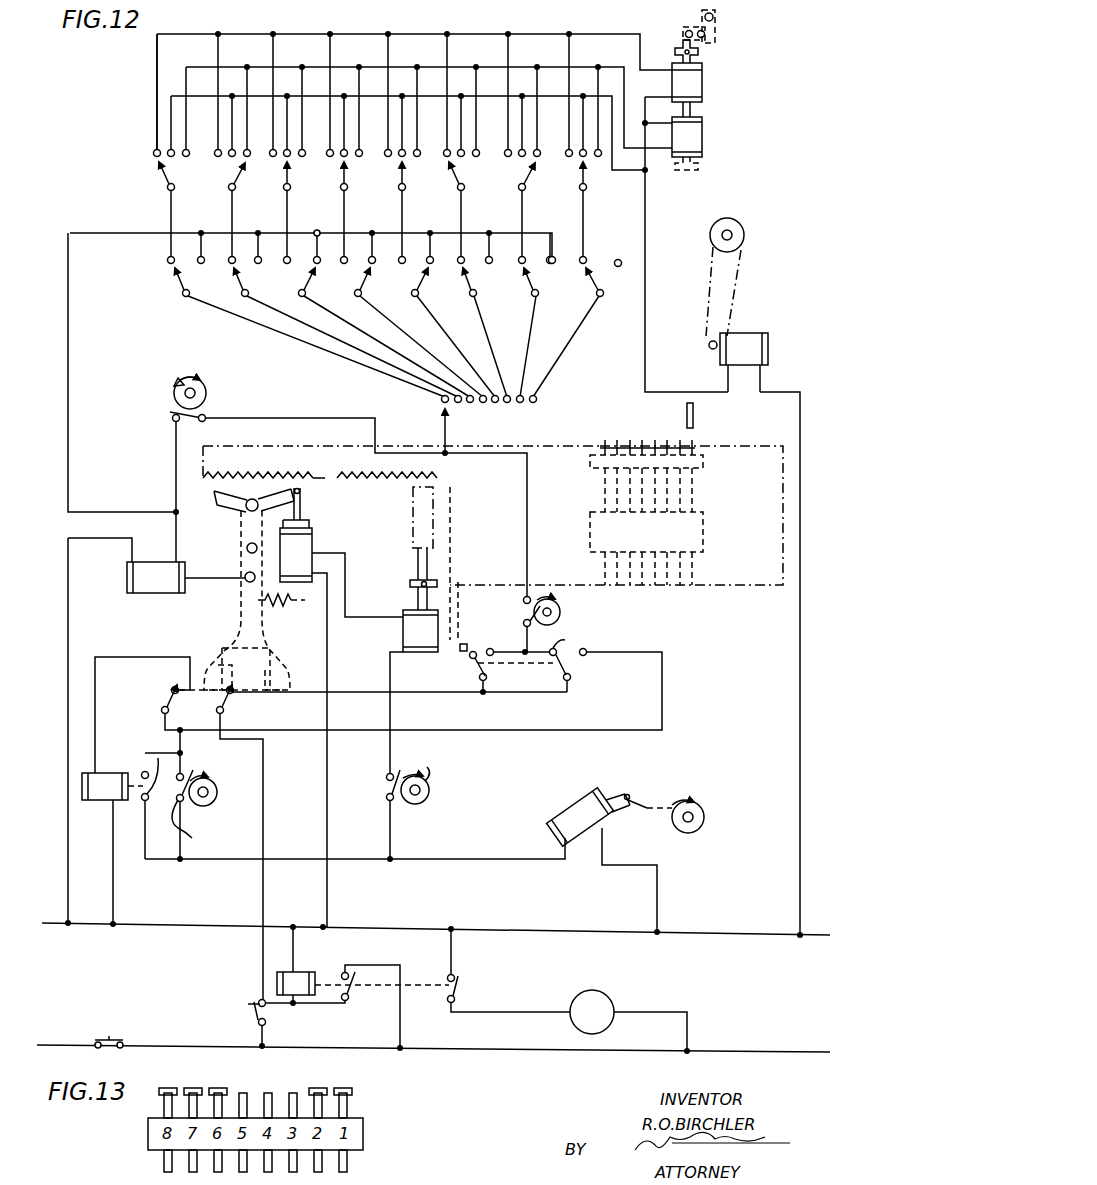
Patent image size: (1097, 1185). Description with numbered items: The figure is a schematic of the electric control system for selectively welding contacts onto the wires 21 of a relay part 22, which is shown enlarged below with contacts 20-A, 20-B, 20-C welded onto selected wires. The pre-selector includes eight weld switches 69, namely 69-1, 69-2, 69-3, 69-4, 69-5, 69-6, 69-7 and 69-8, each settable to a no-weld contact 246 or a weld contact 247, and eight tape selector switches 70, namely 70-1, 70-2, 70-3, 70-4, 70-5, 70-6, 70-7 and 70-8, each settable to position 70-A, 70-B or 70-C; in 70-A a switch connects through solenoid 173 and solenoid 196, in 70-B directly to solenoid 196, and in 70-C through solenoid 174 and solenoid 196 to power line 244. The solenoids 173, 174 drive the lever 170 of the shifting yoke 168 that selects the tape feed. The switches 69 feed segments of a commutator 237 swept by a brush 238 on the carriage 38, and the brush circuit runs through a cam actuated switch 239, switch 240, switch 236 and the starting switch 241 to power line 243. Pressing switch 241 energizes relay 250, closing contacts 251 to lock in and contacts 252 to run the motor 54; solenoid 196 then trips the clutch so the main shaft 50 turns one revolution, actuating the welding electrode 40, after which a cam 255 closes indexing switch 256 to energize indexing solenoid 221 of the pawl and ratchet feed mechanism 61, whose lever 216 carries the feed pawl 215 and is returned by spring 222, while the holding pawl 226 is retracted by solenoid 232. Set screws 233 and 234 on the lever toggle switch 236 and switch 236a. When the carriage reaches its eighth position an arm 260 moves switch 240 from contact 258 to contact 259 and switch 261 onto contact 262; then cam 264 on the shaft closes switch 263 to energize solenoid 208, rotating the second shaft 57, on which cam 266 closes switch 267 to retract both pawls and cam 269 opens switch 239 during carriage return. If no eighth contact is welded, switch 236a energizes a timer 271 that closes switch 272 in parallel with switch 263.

In FIG. 12, the set of switches 70 is at (160, 163).
In FIG. 12, the switch position 70-A is at (160, 150).
In FIG. 12, the switch position 70-B is at (169, 134).
In FIG. 12, the switch position 70-C is at (383, 131).
In FIG. 12, the tape selector switch 70-1 is at (164, 180).
In FIG. 12, the tape selector switch 70-2 is at (236, 175).
In FIG. 12, the tape selector switch 70-3 is at (285, 175).
In FIG. 12, the tape selector switch 70-4 is at (342, 176).
In FIG. 12, the tape selector switch 70-5 is at (400, 176).
In FIG. 12, the tape selector switch 70-6 is at (457, 177).
In FIG. 12, the tape selector switch 70-7 is at (522, 179).
In FIG. 12, the tape selector switch 70-8 is at (581, 182).
In FIG. 12, the set of switches 69 is at (170, 272).
In FIG. 12, the weld selector switch 69-1 is at (179, 295).
In FIG. 12, the weld selector switch 69-2 is at (327, 326).
In FIG. 12, the weld selector switch 69-3 is at (361, 326).
In FIG. 12, the weld selector switch 69-4 is at (397, 324).
In FIG. 12, the weld selector switch 69-5 is at (411, 273).
In FIG. 12, the weld selector switch 69-6 is at (468, 276).
In FIG. 12, the weld selector switch 69-7 is at (528, 276).
In FIG. 12, the weld selector switch 69-8 is at (591, 276).
In FIG. 12, the switch contact 246 is at (200, 254).
In FIG. 12, the switch contact 247 is at (232, 260).
In FIG. 12, the commutator 237 is at (542, 392).
In FIG. 12, the brush 238 is at (447, 440).
In FIG. 12, the main drive shaft 50 is at (172, 390).
In FIG. 12, the cam 255 is at (206, 395).
In FIG. 12, the indexing switch 256 is at (178, 420).
In FIG. 12, the pawl and ratchet feed mechanism 61 is at (215, 527).
In FIG. 12, the feed pawl 215 is at (265, 490).
In FIG. 12, the actuating lever 216 is at (240, 600).
In FIG. 12, the indexing solenoid 221 is at (160, 586).
In FIG. 12, the spring 222 is at (270, 608).
In FIG. 12, the holding pawl 226 is at (440, 525).
In FIG. 12, the arm 260 is at (460, 648).
In FIG. 12, the solenoid 232 is at (403, 650).
In FIG. 12, the cam actuated switch 239 is at (522, 608).
In FIG. 12, the second shaft 57 is at (560, 603).
In FIG. 12, the cam 269 is at (560, 612).
In FIG. 12, the switch contact 262 is at (500, 643).
In FIG. 12, the switch 261 is at (476, 666).
In FIG. 12, the switch contact 258 is at (574, 643).
In FIG. 12, the switch contact 259 is at (590, 650).
In FIG. 12, the switch 240 is at (570, 677).
In FIG. 12, the second switch 236a is at (142, 715).
In FIG. 12, the switch 236 is at (229, 704).
In FIG. 12, the set screw 234 is at (237, 667).
In FIG. 12, the set screw 233 is at (228, 684).
In FIG. 12, the timer 271 is at (108, 782).
In FIG. 12, the switch 272 is at (157, 756).
In FIG. 12, the cam 264 is at (204, 808).
In FIG. 12, the switch 263 is at (197, 827).
In FIG. 12, the switch 267 is at (386, 782).
In FIG. 12, the cam 266 is at (428, 782).
In FIG. 12, the solenoid 208 is at (578, 808).
In FIG. 12, the solenoid 196 is at (738, 340).
In FIG. 12, the welding electrode 40 is at (696, 420).
In FIG. 12, the wires 21 is at (696, 446).
In FIG. 12, the relay part 22 is at (710, 492).
In FIG. 12, the carriage 38 is at (738, 590).
In FIG. 12, the solenoid 173 is at (688, 86).
In FIG. 12, the solenoid 174 is at (688, 134).
In FIG. 12, the actuating lever 170 is at (693, 28).
In FIG. 12, the shifting yoke 168 is at (716, 26).
In FIG. 12, the power line 244 is at (178, 928).
In FIG. 12, the relay 250 is at (302, 972).
In FIG. 12, the starting switch 241 is at (247, 1022).
In FIG. 12, the contacts 251 is at (362, 1016).
In FIG. 12, the power line 243 is at (179, 1044).
In FIG. 12, the contacts 252 is at (460, 992).
In FIG. 12, the motor 54 is at (606, 996).
In FIG. 13, the contact 20-A is at (192, 1088).
In FIG. 13, the contact 20-B is at (344, 1088).
In FIG. 13, the contact 20-C is at (165, 1088).